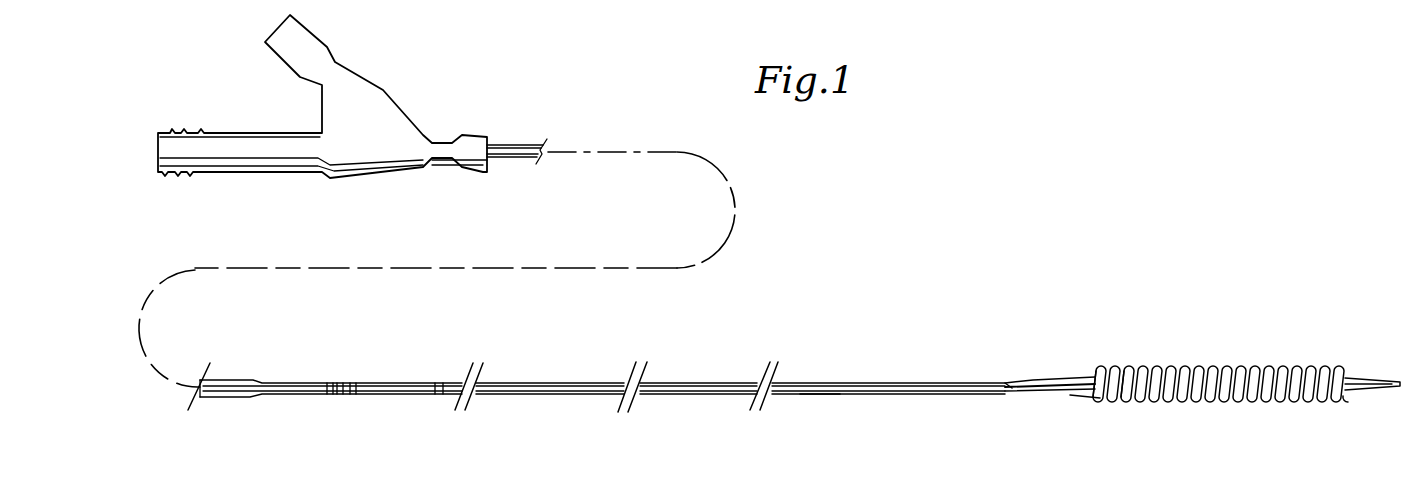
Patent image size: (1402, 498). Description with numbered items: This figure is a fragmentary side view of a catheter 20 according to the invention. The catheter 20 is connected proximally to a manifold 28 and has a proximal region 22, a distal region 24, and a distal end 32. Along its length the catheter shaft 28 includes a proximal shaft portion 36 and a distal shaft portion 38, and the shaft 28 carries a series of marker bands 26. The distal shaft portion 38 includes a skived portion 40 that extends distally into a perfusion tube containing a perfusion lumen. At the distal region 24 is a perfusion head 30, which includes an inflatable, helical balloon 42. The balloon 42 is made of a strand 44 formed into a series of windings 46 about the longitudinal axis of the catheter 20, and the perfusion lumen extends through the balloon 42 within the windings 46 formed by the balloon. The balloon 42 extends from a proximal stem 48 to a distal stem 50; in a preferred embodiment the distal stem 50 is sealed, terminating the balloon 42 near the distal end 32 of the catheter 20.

The catheter 20 is at (825, 260).
The proximal region 22 is at (227, 397).
The distal region 24 is at (1222, 400).
The marker bands 26 is at (330, 397).
The catheter shaft 28 is at (390, 108).
The perfusion head 30 is at (1162, 280).
The distal end 32 is at (1358, 377).
The proximal shaft portion 36 is at (817, 395).
The distal shaft portion 38 is at (1030, 393).
The skived portion 40 is at (1018, 383).
The helical balloon 42 is at (1218, 367).
The strand 44 is at (1097, 367).
The windings 46 is at (1125, 365).
The proximal stem 48 is at (1082, 397).
The distal stem 50 is at (1342, 402).